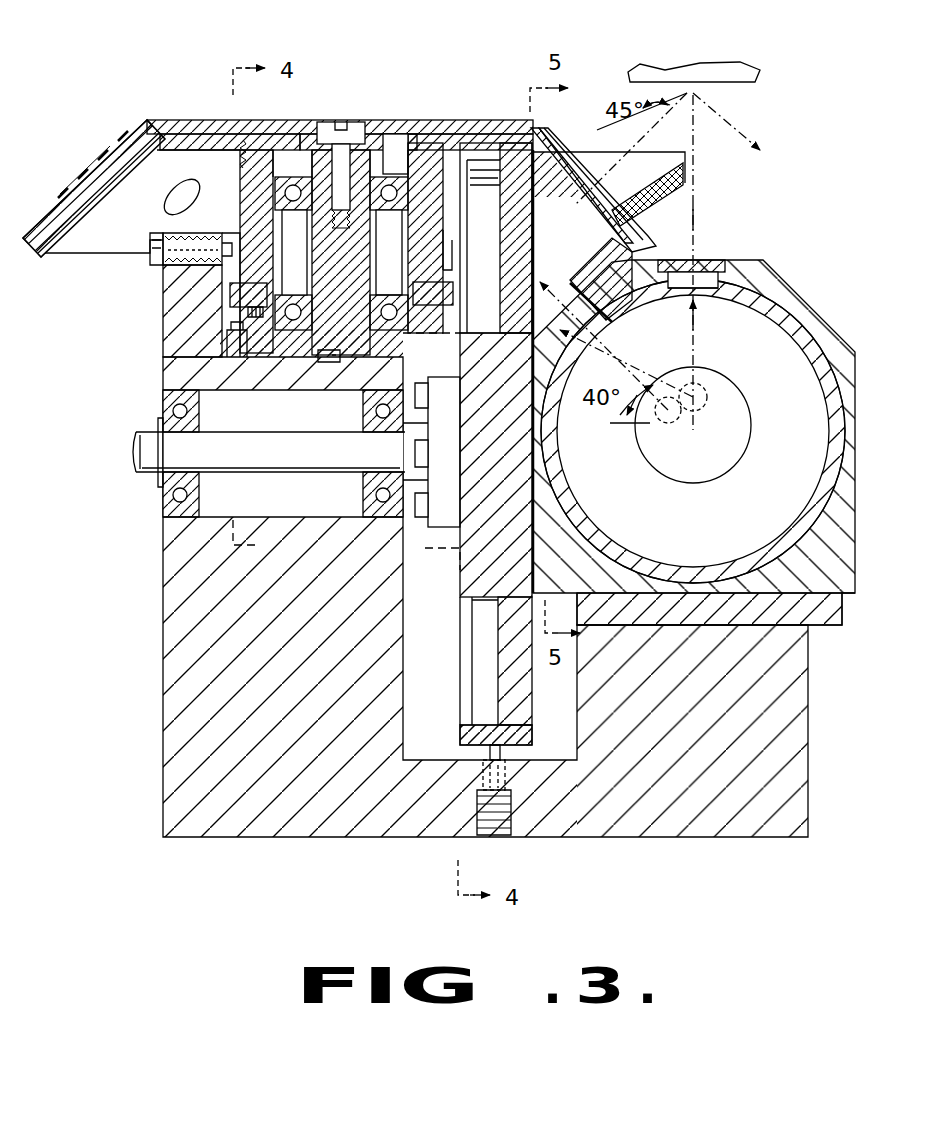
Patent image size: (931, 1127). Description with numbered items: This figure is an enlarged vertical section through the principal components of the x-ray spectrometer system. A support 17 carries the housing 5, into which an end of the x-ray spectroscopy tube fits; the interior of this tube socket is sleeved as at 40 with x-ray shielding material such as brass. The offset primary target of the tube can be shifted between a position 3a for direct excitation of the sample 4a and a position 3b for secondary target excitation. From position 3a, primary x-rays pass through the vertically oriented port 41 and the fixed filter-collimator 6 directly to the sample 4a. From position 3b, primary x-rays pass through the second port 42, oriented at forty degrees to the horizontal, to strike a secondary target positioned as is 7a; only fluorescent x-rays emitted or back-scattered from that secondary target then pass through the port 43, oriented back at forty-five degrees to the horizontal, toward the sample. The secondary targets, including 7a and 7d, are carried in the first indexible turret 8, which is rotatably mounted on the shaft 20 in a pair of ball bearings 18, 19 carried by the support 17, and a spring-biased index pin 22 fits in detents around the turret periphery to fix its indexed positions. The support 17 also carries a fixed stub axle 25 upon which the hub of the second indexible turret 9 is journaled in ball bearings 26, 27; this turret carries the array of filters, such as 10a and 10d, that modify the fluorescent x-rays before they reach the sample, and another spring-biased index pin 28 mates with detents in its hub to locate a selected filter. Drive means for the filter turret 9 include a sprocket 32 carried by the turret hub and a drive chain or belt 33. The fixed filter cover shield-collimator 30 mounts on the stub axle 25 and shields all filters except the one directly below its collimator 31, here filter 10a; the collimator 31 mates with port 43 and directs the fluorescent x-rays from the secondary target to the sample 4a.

The primary target position for direct excitation 3a is at (705, 385).
The primary target position for secondary target excitation 3b is at (660, 420).
The sample 4a is at (670, 68).
The housing 5 is at (775, 270).
The fixed filter-collimator 6 is at (712, 265).
The secondary target 7a is at (505, 265).
The secondary target 7d is at (510, 655).
The first indexible turret 8 is at (462, 578).
The second indexible turret 9 is at (78, 248).
The filter 10a is at (636, 205).
The filter 10d is at (92, 185).
The support 17 is at (172, 738).
The ball bearing 18 is at (165, 510).
The ball bearing 19 is at (378, 495).
The shaft 20 is at (135, 450).
The spring-biased index pin 22 is at (510, 748).
The fixed stub axle 25 is at (370, 240).
The ball bearing 26 is at (293, 253).
The ball bearing 27 is at (292, 300).
The spring-biased index pin 28 is at (232, 248).
The fixed filter cover shield-collimator 30 is at (392, 128).
The collimator 31 is at (685, 147).
The sprocket 32 is at (452, 290).
The drive chain or belt 33 is at (452, 306).
The sleeve 40 is at (830, 400).
The port 41 is at (712, 290).
The second port 42 is at (605, 318).
The port 43 is at (577, 165).